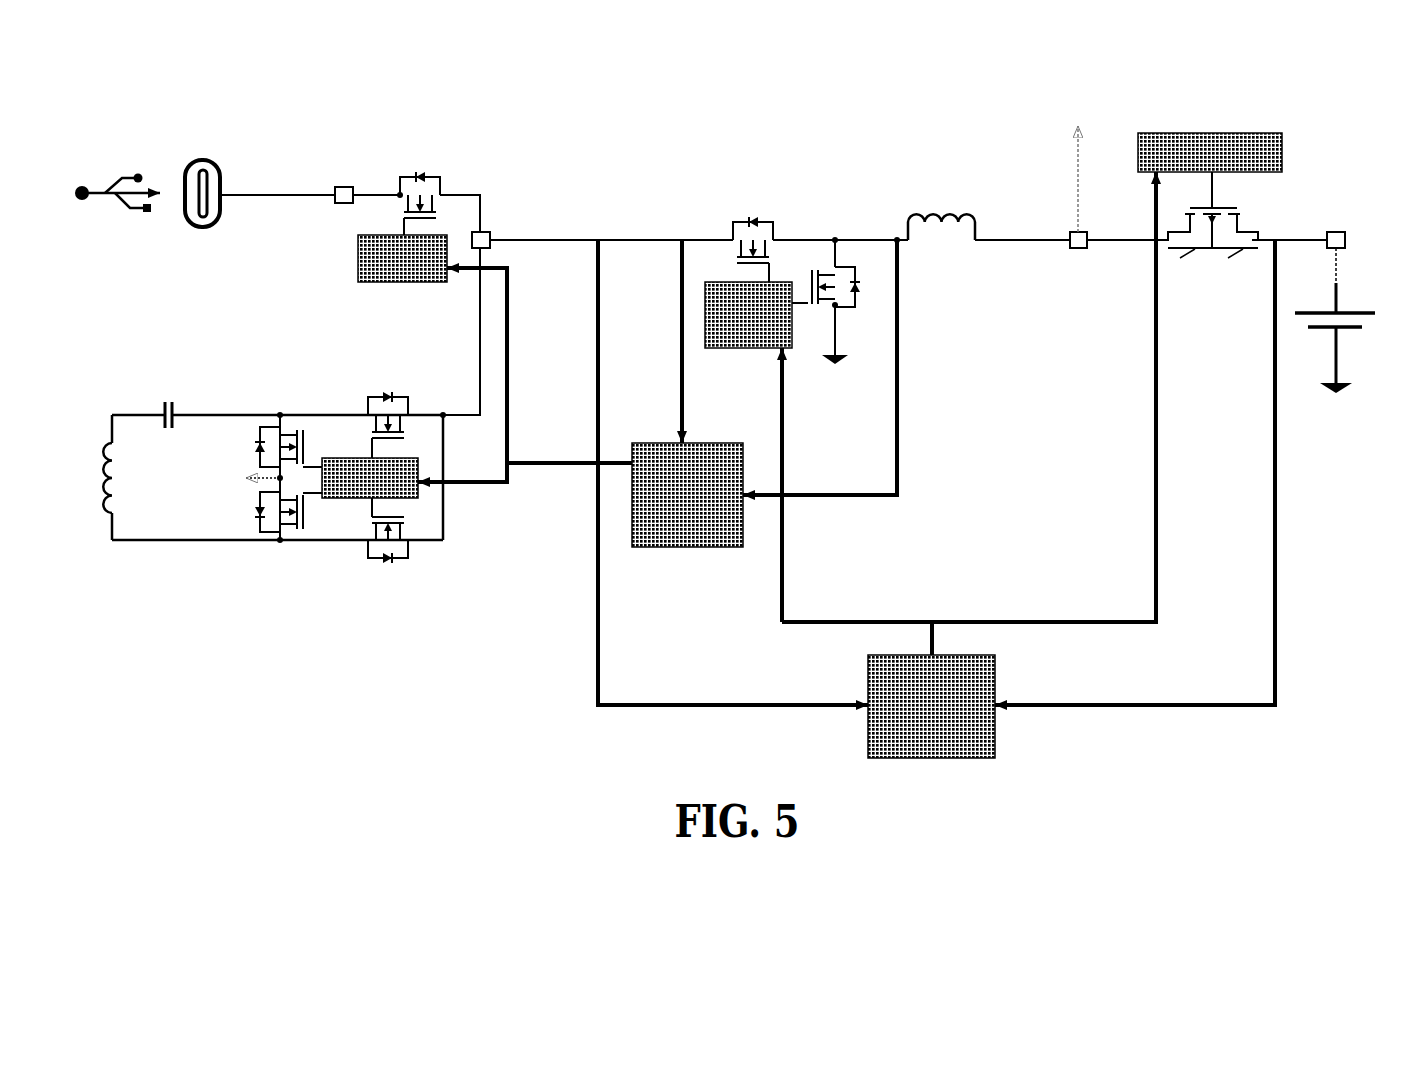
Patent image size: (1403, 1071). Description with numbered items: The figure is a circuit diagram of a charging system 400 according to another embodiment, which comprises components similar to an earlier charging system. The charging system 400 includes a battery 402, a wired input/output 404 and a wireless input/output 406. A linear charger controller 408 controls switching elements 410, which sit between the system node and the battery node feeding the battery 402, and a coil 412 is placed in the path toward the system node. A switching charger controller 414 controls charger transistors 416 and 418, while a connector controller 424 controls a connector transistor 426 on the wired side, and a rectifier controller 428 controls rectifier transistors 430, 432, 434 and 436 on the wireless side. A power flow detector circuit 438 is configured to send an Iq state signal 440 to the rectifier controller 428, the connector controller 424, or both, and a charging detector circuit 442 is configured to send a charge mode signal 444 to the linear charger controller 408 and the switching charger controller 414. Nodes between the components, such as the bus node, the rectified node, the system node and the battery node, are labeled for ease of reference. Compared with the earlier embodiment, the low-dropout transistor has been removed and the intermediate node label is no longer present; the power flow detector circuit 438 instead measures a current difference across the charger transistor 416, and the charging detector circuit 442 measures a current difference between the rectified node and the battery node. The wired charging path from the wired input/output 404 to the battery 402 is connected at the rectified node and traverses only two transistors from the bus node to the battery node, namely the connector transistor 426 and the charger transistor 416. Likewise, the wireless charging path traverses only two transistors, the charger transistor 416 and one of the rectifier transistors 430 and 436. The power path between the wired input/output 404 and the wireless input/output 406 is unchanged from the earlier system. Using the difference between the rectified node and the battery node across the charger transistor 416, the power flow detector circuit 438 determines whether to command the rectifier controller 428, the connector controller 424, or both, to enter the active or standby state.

The charging system 400 is at (748, 114).
The battery 402 is at (1345, 327).
The wired input/output 404 is at (203, 160).
The wireless input/output 406 is at (112, 443).
The linear charger controller 408 is at (1188, 133).
The switching elements 410 is at (1198, 247).
The coil 412 is at (945, 213).
The switching charger controller 414 is at (725, 348).
The charger transistor 416 is at (768, 220).
The charger transistor 418 is at (843, 305).
The connector controller 424 is at (407, 283).
The connector transistor 426 is at (428, 178).
The rectifier controller 428 is at (343, 500).
The rectifier transistor 430 is at (384, 398).
The rectifier transistor 432 is at (260, 452).
The rectifier transistor 434 is at (260, 506).
The rectifier transistor 436 is at (400, 560).
The power flow detector circuit 438 is at (677, 548).
The Iq state signal 440 is at (533, 467).
The charging detector circuit 442 is at (930, 758).
The charge mode signal 444 is at (947, 620).